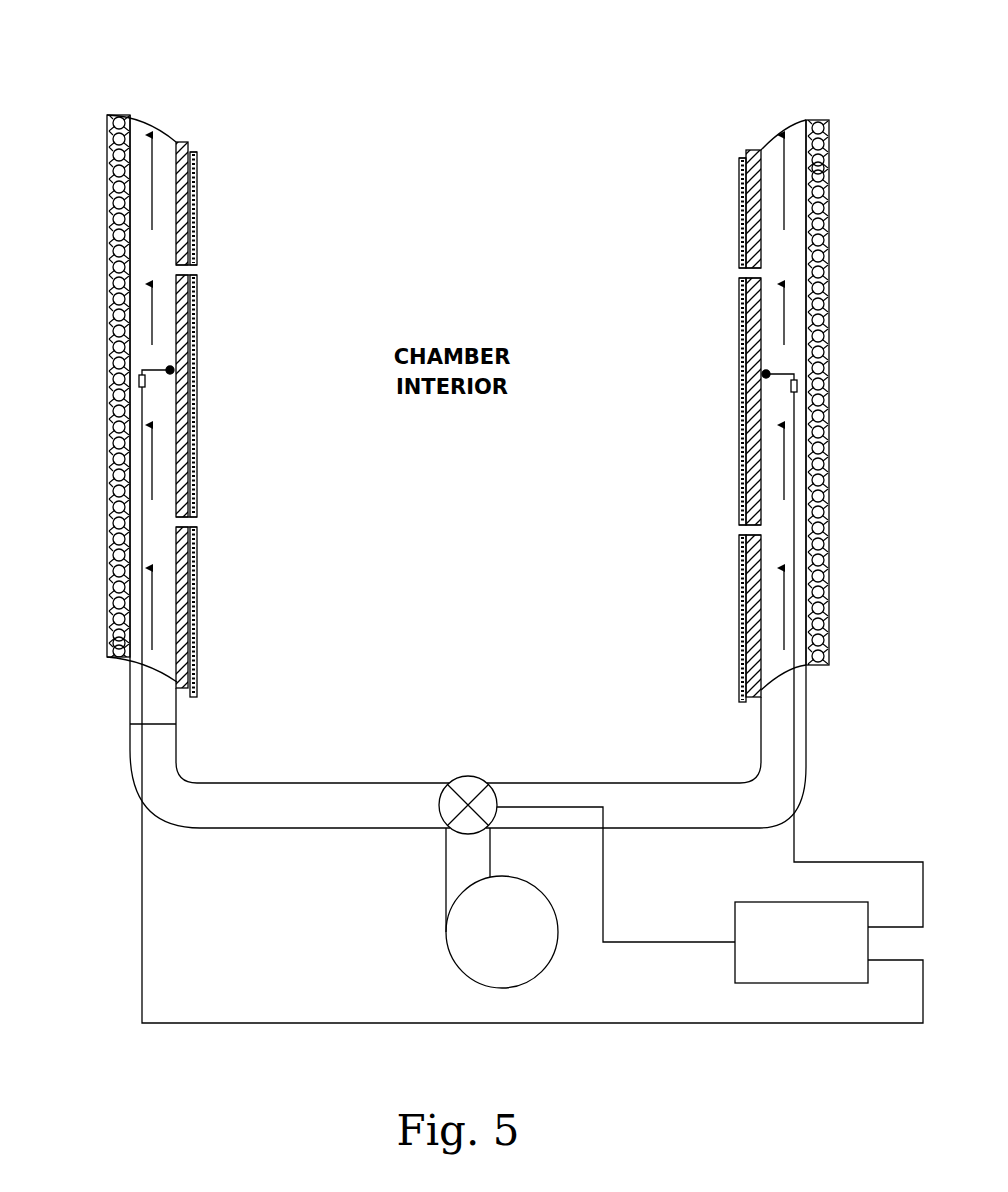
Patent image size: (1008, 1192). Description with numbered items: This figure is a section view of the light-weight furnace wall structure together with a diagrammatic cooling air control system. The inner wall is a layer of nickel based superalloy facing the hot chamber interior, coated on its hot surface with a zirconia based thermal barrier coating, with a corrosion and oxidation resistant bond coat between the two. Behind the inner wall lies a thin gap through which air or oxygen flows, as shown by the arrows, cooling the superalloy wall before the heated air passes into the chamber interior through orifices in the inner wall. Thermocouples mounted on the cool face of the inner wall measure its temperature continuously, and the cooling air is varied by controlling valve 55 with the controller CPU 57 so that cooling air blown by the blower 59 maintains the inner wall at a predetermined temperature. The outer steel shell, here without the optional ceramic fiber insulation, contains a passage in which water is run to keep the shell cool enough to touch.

The valve 55 is at (587, 816).
The controller CPU 57 is at (795, 915).
The blower 59 is at (463, 908).